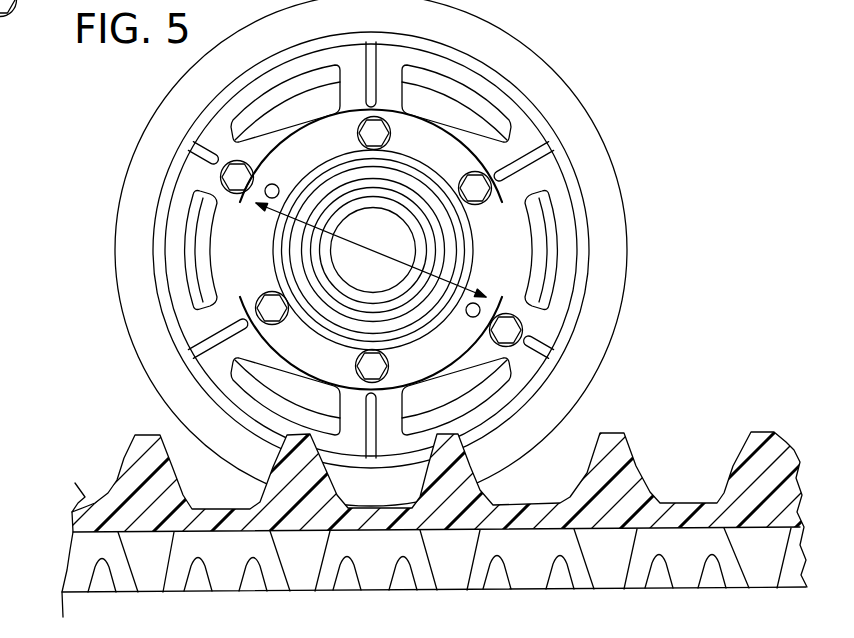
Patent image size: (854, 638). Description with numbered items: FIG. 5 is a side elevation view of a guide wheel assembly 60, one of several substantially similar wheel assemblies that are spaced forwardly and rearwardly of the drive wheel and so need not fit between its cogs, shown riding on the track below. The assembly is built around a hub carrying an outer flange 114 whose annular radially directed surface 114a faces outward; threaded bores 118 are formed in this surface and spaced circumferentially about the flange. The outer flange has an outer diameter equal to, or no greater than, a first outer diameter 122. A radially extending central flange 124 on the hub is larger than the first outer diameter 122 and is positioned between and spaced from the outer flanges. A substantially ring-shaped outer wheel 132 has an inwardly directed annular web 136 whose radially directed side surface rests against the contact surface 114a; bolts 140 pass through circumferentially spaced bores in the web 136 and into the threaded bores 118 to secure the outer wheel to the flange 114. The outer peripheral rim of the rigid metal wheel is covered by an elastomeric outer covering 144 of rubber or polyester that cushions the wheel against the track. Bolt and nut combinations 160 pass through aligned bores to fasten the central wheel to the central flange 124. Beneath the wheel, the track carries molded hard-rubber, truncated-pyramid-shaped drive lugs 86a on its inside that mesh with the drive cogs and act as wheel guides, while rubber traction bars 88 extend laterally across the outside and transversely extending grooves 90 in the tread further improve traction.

The wheel assembly 60 is at (130, 115).
The drive lug 86a is at (754, 450).
The traction bar 88 is at (583, 583).
The groove 90 is at (714, 567).
The outer flange 114 is at (250, 210).
The annular radially directed surface 114a is at (250, 232).
The threaded bore 118 is at (267, 185).
The first outer diameter 122 is at (265, 256).
The central flange 124 is at (527, 258).
The outer wheel 132 is at (537, 115).
The annular web 136 is at (492, 232).
The bolt 140 is at (476, 185).
The elastomeric outer covering 144 is at (597, 152).
The bolt and nut combination 160 is at (222, 176).